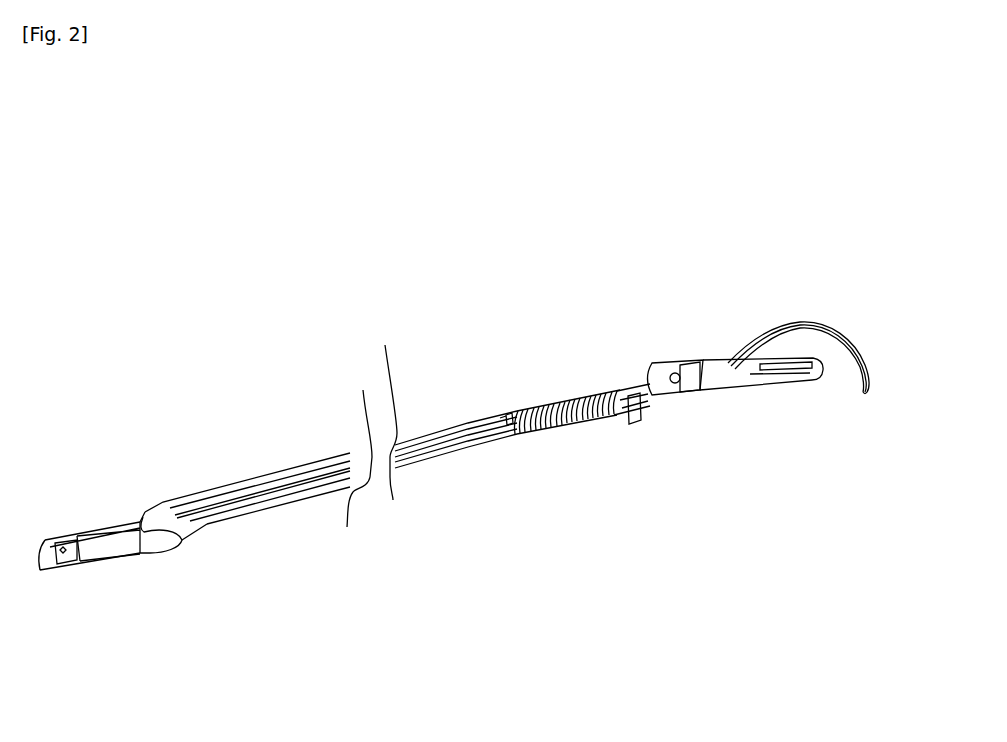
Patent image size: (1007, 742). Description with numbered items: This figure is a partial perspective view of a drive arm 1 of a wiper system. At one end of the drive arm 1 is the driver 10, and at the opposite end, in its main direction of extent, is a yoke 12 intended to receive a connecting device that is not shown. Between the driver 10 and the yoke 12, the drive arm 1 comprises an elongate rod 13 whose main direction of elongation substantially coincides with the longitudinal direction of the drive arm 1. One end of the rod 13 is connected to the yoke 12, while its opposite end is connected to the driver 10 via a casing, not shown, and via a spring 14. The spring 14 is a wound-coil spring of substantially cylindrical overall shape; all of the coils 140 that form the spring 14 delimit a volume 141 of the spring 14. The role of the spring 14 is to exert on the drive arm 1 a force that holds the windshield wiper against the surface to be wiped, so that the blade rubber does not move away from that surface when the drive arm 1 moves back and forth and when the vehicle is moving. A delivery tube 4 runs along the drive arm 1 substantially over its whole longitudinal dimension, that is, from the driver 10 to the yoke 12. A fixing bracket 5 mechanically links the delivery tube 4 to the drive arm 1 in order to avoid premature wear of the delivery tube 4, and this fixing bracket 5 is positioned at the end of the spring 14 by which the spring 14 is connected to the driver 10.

The drive arm 1 is at (483, 298).
The delivery tube 4 is at (822, 317).
The fixing bracket 5 is at (627, 418).
The driver 10 is at (730, 378).
The yoke 12 is at (83, 525).
The elongate rod 13 is at (433, 474).
The spring 14 is at (597, 390).
The coils 140 is at (588, 407).
The volume 141 is at (513, 407).